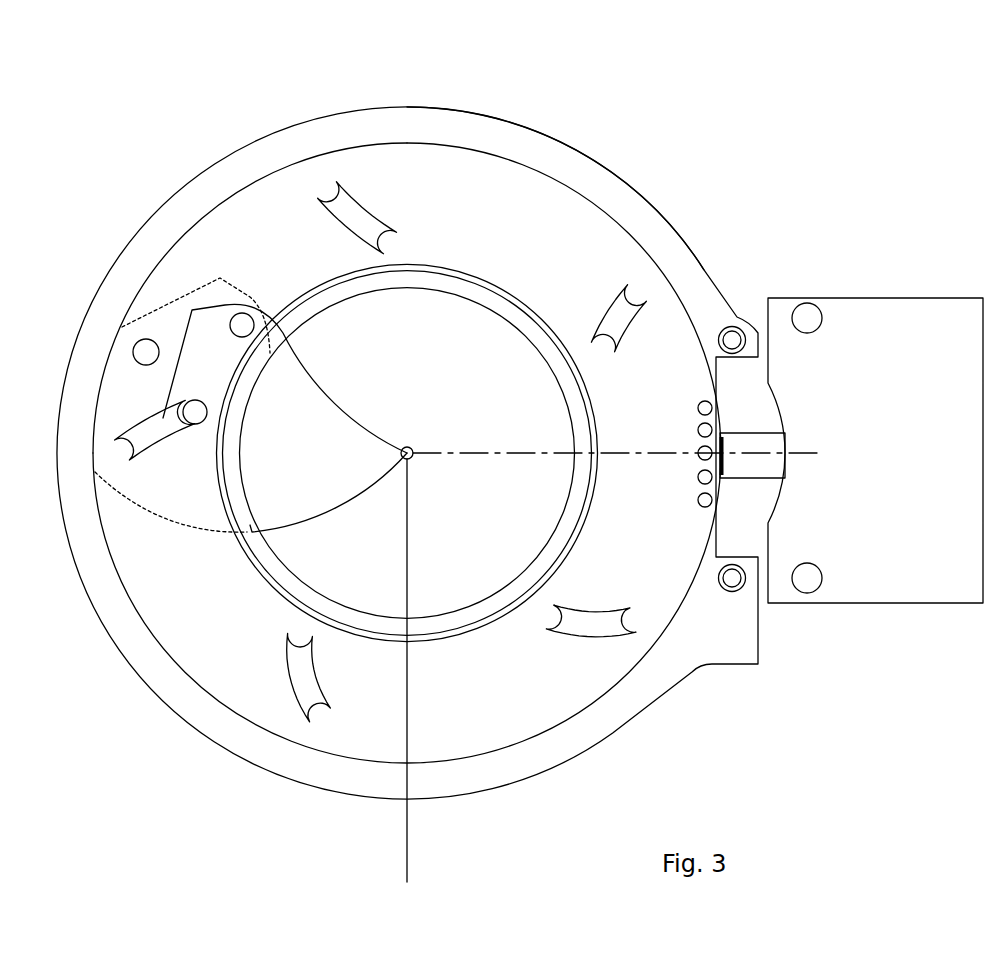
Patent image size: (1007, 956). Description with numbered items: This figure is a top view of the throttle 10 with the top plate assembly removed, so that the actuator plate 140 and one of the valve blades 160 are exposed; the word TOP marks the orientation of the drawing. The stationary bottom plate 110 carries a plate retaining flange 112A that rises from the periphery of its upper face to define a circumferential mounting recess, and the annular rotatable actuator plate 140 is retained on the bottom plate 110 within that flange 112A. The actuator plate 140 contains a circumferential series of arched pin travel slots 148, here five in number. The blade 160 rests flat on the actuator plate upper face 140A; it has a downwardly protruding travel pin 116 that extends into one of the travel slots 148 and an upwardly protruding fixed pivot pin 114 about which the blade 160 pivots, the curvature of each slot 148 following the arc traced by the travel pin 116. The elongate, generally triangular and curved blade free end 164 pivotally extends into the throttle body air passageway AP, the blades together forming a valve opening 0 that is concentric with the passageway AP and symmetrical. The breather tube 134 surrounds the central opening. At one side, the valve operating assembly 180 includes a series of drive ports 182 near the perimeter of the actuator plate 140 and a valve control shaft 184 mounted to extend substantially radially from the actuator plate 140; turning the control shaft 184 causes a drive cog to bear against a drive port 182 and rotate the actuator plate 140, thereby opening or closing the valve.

The throttle 10 is at (830, 102).
The stationary bottom plate 110 is at (615, 727).
The plate retaining flange 112A is at (565, 170).
The fixed pivot pin 114 is at (241, 314).
The travel pin 116 is at (195, 405).
The breather tube 134 is at (455, 283).
The actuator plate 140 is at (407, 453).
The actuator plate upper face 140A is at (240, 223).
The pin travel slots 148 is at (346, 188).
The valve blade 160 is at (251, 405).
The blade free end 164 is at (361, 462).
The valve operating assembly 180 is at (750, 242).
The drive ports 182 is at (698, 453).
The valve control shaft 184 is at (753, 436).
The valve opening 0 is at (412, 449).
The throttle body air passageway AP is at (445, 575).
The top orientation TOP is at (403, 208).